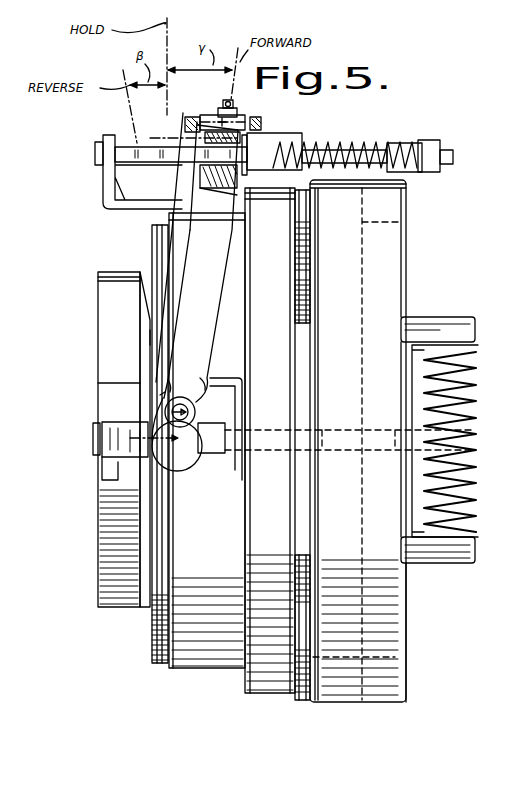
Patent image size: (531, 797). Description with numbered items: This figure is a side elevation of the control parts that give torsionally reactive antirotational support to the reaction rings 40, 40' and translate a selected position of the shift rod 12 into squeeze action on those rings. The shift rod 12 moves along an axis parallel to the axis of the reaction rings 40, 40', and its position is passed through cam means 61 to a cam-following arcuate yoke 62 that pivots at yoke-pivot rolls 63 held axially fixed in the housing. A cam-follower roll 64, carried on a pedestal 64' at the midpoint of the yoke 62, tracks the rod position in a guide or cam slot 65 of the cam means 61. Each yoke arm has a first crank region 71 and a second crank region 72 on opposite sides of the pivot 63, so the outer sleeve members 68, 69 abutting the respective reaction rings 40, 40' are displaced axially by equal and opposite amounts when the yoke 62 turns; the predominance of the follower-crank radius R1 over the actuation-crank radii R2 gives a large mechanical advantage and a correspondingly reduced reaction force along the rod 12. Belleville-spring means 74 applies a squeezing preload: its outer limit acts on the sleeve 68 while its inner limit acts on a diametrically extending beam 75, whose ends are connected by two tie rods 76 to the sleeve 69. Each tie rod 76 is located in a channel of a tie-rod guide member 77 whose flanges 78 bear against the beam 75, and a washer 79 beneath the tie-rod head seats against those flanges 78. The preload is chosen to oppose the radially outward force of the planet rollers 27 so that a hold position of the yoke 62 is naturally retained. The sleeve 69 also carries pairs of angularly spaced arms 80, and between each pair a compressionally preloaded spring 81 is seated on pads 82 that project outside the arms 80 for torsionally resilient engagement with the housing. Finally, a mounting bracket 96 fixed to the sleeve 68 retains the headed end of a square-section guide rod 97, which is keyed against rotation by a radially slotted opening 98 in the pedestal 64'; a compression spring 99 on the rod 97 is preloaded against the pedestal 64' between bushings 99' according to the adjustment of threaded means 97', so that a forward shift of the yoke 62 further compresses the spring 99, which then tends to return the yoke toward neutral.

The shift rod 12 is at (155, 140).
The cam means 61 is at (188, 116).
The cam-follower roll 64 is at (222, 114).
The cam slot 65 is at (245, 117).
The guide rod 97 is at (181, 163).
The slotted opening 98 is at (203, 143).
The mounting bracket 96 is at (103, 186).
The compression spring 99 is at (345, 138).
The bushings 99' is at (334, 140).
The threaded means 97' is at (438, 137).
The pedestal 64' is at (240, 196).
The beam 75 is at (108, 300).
The follower-crank radius R1 is at (150, 338).
The actuation-crank radii R2 is at (163, 396).
The planet rollers 27 is at (295, 290).
The arcuate yoke 62 is at (230, 304).
The first crank region 71 is at (208, 384).
The yoke-pivot roll 63 is at (197, 406).
The tie rods 76 is at (95, 440).
The washer 79 is at (103, 458).
The flanges 78 is at (110, 468).
The tie-rod guide member 77 is at (208, 462).
The second crank region 72 is at (177, 471).
The sleeve member 69 is at (345, 500).
The spring 81 is at (478, 420).
The pads 82 is at (478, 350).
The arms 80 is at (476, 330).
The Belleville-spring means 74 is at (150, 640).
The sleeve member 68 is at (205, 660).
The reaction ring 40 is at (270, 457).
The reaction ring 40' is at (358, 458).